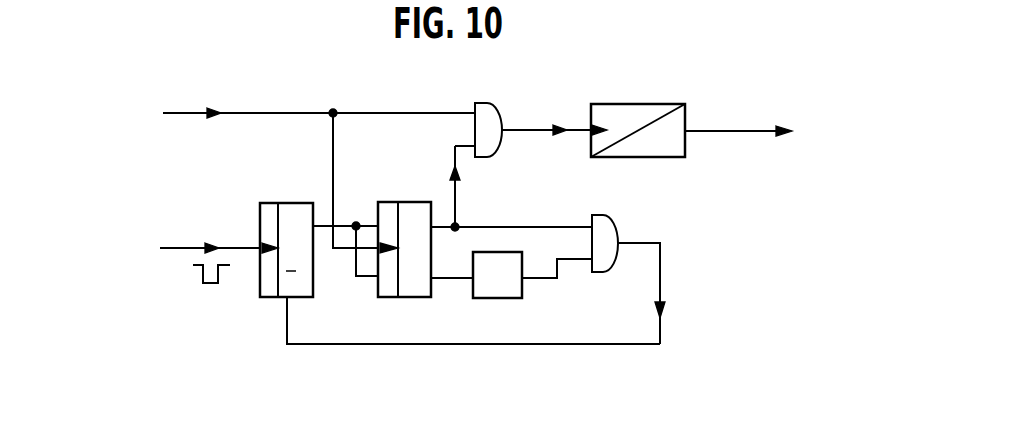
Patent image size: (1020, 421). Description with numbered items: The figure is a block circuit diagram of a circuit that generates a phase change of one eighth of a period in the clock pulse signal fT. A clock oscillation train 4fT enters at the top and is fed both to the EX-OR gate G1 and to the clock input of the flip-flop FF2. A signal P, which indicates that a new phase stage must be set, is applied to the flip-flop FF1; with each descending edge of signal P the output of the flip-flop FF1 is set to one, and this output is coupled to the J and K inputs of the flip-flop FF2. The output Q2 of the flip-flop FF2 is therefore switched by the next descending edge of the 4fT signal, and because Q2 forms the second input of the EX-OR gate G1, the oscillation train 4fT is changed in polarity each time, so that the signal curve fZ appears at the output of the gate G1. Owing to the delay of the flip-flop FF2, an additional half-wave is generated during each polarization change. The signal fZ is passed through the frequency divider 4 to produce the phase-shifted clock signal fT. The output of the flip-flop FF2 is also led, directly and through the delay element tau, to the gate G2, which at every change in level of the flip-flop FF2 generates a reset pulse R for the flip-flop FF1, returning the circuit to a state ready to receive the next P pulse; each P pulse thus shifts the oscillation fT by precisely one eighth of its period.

The 4·fT signal 4fT is at (186, 112).
The EX-OR gate G1 is at (490, 108).
The gate G2 is at (600, 222).
The output of flip-flop FF2 Q2 is at (456, 200).
The signal curve fZ is at (527, 127).
The frequency divider 4 is at (638, 130).
The clock pulse signal fT is at (749, 129).
The signal P is at (182, 247).
The flip-flop FF1 is at (290, 203).
The flip-flop FF2 is at (412, 202).
The delay element tau is at (497, 275).
The reset signal R is at (685, 293).